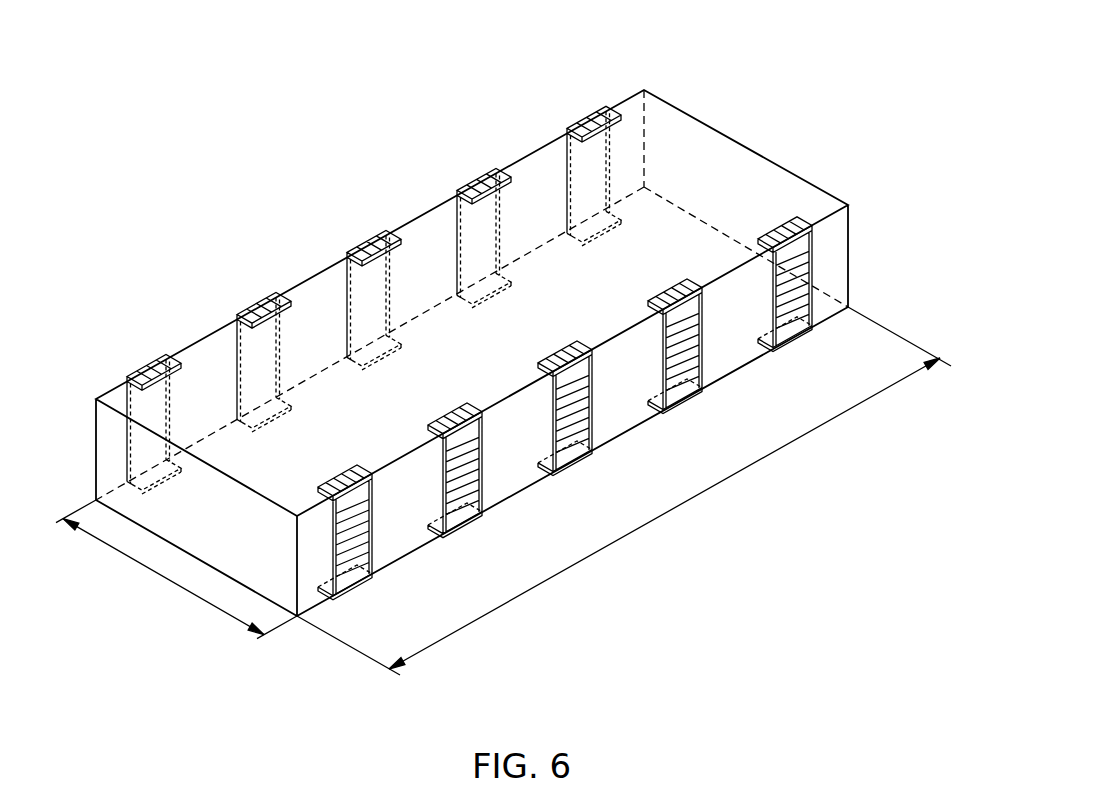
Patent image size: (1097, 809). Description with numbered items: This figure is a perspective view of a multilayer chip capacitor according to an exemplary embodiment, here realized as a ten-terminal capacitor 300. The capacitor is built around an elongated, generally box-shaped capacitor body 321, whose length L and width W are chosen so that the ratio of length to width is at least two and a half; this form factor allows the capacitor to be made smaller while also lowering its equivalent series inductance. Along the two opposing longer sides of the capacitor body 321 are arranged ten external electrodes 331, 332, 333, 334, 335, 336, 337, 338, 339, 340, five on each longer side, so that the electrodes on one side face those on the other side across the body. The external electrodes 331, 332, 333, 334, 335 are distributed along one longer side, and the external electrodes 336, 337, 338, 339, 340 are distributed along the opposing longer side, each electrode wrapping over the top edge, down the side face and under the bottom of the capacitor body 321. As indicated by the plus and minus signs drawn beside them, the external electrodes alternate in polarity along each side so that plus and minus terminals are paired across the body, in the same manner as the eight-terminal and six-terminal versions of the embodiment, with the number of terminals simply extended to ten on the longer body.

The ten-terminal capacitor 300 is at (769, 46).
The capacitor body 321 is at (722, 148).
The external electrode 331 is at (167, 340).
The external electrode 332 is at (282, 272).
The external electrode 333 is at (390, 215).
The external electrode 334 is at (498, 155).
The external electrode 335 is at (606, 93).
The external electrode 336 is at (816, 292).
The external electrode 337 is at (701, 358).
The external electrode 338 is at (593, 419).
The external electrode 339 is at (484, 482).
The external electrode 340 is at (367, 546).